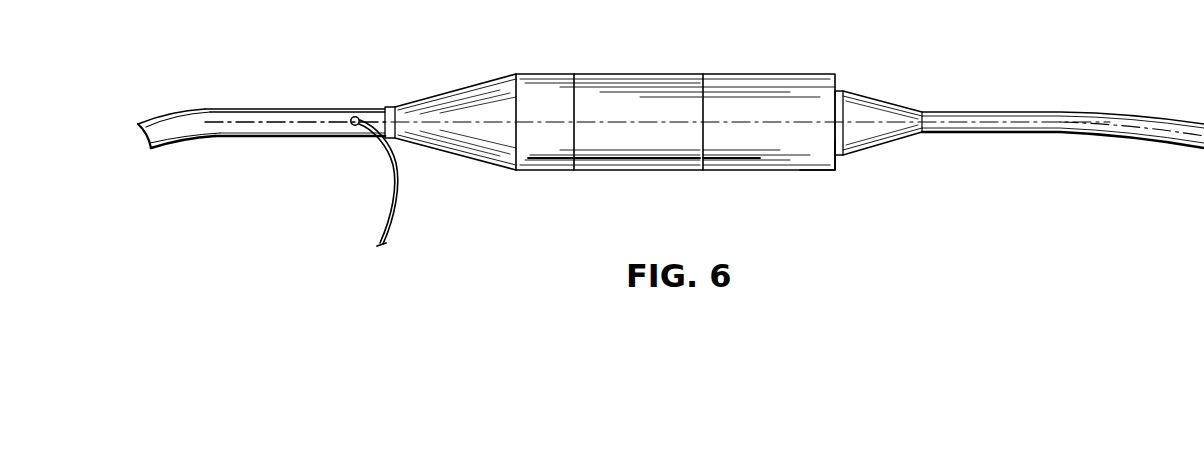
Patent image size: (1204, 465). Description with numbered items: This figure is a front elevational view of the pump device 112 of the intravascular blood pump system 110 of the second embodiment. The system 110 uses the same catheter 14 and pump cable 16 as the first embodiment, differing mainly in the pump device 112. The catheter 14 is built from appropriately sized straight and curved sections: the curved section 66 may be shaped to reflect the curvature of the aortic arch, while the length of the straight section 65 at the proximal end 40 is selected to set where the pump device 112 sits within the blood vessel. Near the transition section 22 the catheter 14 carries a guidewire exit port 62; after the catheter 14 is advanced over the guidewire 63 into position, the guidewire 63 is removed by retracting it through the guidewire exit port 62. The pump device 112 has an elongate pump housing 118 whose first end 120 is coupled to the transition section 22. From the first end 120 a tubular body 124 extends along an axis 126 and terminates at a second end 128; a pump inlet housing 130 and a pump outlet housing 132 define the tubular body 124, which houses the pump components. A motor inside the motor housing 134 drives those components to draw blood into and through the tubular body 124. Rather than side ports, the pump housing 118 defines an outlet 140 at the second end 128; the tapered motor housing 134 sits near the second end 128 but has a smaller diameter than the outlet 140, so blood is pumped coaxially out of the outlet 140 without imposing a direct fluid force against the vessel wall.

The intravascular blood pump system 110 is at (790, 34).
The catheter 14 is at (222, 107).
The curved section 66 is at (177, 147).
The axis 126 is at (272, 121).
The straight section 65 is at (320, 108).
The guidewire exit port 62 is at (355, 117).
The guidewire 63 is at (397, 181).
The proximal end 40 is at (389, 108).
The transition section 22 is at (456, 88).
The pump device 112 is at (669, 53).
The pump housing 118 is at (620, 76).
The first end 120 is at (574, 82).
The tubular body 124 is at (719, 84).
The pump inlet housing 130 is at (638, 173).
The pump outlet housing 132 is at (750, 173).
The second end 128 is at (831, 171).
The outlet 140 is at (836, 89).
The motor housing 134 is at (884, 103).
The pump cable 16 is at (980, 112).